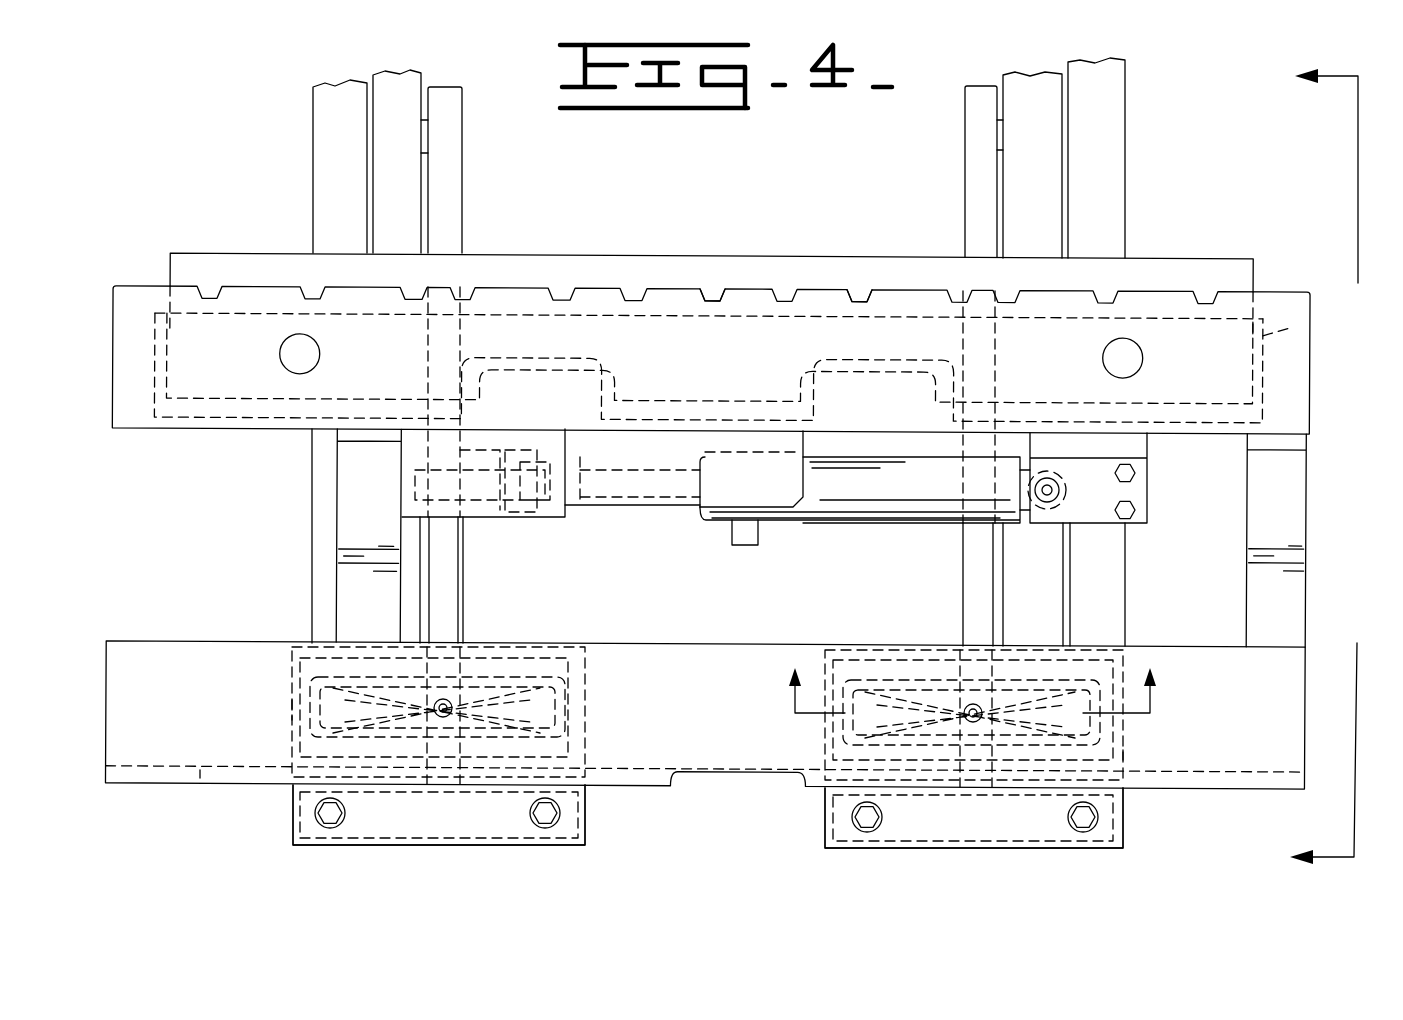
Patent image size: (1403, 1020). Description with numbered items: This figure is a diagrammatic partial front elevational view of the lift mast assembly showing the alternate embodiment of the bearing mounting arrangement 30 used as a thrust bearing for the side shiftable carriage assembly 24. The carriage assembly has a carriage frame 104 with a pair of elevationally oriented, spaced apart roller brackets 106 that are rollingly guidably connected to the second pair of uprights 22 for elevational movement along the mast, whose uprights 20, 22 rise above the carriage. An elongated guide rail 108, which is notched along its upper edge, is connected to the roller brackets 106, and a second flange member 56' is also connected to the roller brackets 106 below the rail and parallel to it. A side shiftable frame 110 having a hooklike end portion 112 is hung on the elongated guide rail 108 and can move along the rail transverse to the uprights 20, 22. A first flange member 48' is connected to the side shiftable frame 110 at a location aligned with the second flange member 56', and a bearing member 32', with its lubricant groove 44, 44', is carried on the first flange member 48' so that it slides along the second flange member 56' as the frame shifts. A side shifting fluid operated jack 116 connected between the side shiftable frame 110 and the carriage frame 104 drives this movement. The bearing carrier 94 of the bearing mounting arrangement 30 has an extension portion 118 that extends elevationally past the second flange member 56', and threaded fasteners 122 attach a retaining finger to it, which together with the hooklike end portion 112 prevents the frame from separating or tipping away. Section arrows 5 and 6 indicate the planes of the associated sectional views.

The section line 5- 5 is at (1339, 472).
The section line 6- 6 is at (972, 714).
The uprights 20 is at (313, 128).
The second pair of uprights 22 is at (380, 145).
The side shiftable carriage assembly 24 is at (1180, 270).
The bearing mounting arrangement 30 is at (270, 615).
The bearing member 32' is at (751, 688).
The groove 44 is at (916, 749).
The groove 44' is at (437, 661).
The first flange member 48' is at (705, 715).
The second flange member 56' is at (165, 806).
The bearing carrier 94 is at (292, 707).
The carriage frame 104 is at (818, 294).
The roller brackets 106 is at (462, 216).
The elongated guide rail 108 is at (1292, 326).
The side shiftable frame 110 is at (1318, 408).
The hooklike end portion 112 is at (693, 264).
The side shifting fluid operated jack 116 is at (850, 523).
The extension portion 118 is at (585, 808).
The threaded fasteners 122 is at (325, 818).